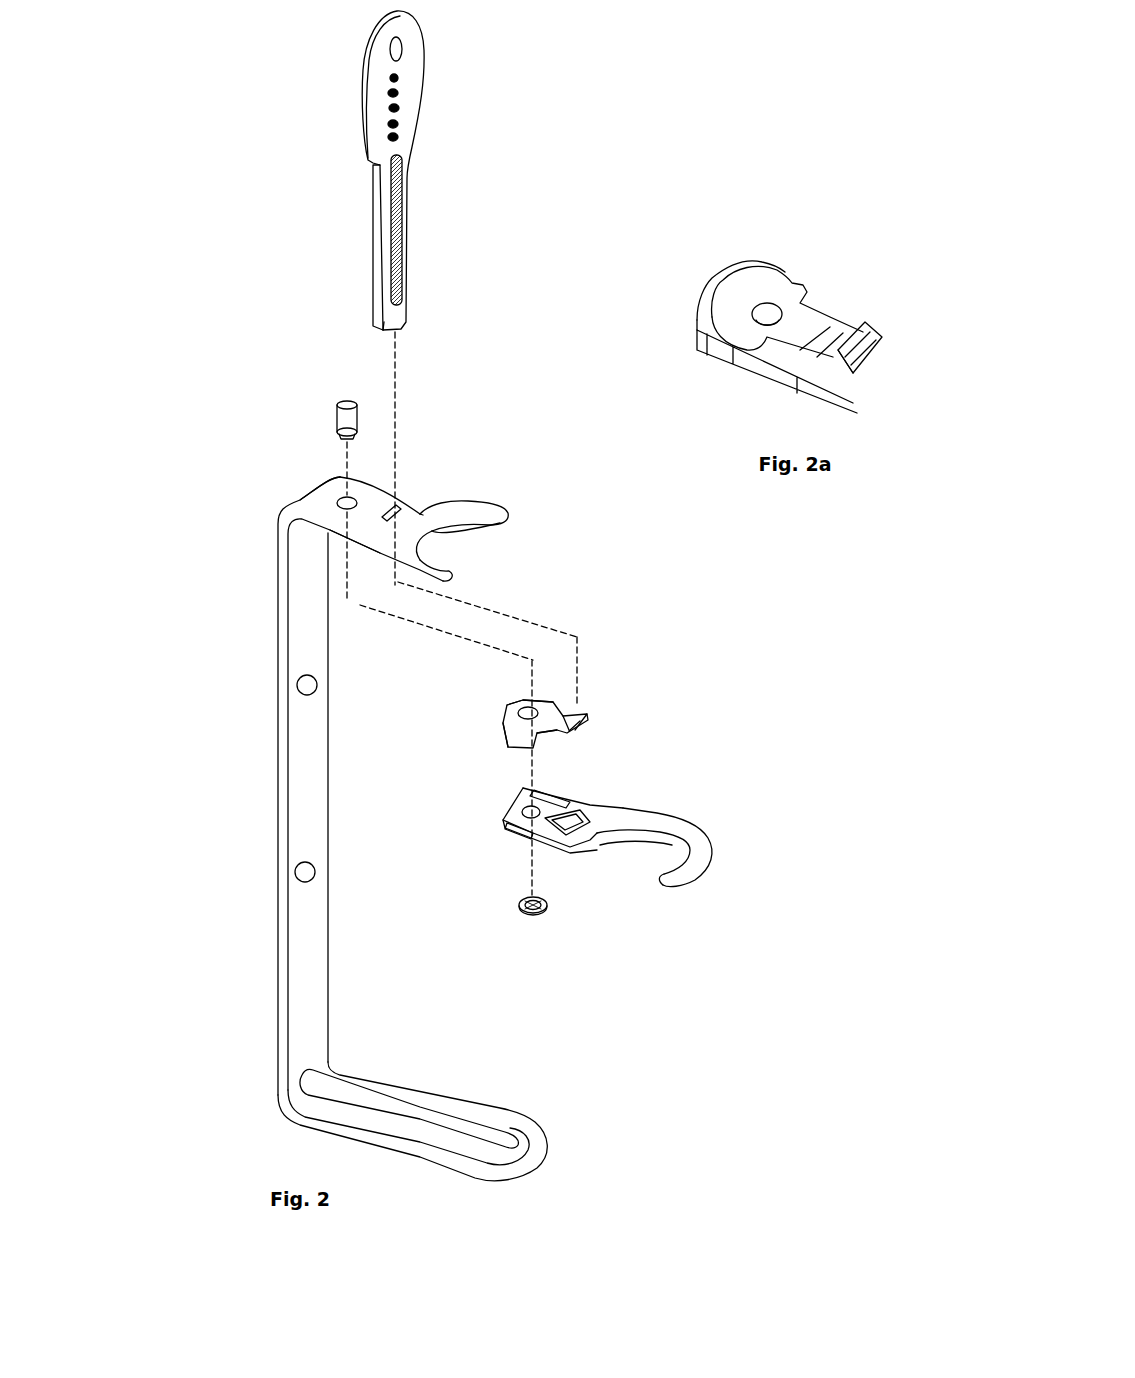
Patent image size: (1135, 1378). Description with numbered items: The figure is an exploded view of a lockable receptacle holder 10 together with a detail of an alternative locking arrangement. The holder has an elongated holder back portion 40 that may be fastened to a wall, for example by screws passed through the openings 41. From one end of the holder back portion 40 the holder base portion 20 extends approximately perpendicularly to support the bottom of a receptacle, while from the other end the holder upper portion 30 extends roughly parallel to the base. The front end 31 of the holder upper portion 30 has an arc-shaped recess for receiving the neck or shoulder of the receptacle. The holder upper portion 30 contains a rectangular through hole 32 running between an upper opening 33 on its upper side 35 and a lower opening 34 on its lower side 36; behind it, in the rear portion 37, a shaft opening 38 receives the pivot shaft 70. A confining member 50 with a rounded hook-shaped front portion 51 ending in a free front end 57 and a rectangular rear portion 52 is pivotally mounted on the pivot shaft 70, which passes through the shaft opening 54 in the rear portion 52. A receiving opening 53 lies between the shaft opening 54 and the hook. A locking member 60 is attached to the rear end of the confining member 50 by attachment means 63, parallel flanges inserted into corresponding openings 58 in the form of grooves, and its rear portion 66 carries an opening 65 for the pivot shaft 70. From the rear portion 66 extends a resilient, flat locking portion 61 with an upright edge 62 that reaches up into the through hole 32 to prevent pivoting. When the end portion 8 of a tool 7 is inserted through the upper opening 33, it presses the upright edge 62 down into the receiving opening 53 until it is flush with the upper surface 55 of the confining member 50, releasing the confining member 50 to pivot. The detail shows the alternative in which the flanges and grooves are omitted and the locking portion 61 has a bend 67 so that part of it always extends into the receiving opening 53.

In FIG. 2, the tool 7 is at (345, 120).
In FIG. 2, the end portion of the tool 8 is at (380, 325).
In FIG. 2, the receptacle holder 10 is at (175, 480).
In FIG. 2, the holder base portion 20 is at (488, 1105).
In FIG. 2, the holder upper portion 30 is at (407, 507).
In FIG. 2, the front end of the holder upper portion 31 is at (492, 512).
In FIG. 2, the through hole 32 is at (404, 500).
In FIG. 2, the upper opening 33 is at (388, 509).
In FIG. 2, the lower opening 34 is at (377, 548).
In FIG. 2, the upper side of the holder upper portion 35 is at (423, 513).
In FIG. 2, the lower side of the holder upper portion 36 is at (437, 533).
In FIG. 2, the rear portion of the holder upper portion 37 is at (330, 483).
In FIG. 2, the shaft opening 38 is at (337, 500).
In FIG. 2, the holder back portion 40 is at (270, 754).
In FIG. 2, the openings 41 is at (297, 683).
In FIG. 2, the confining member 50 is at (607, 863).
In FIG. 2A, the confining member 50 is at (775, 283).
In FIG. 2, the hook-shaped front portion 51 is at (696, 874).
In FIG. 2, the rear portion of the confining member 52 is at (503, 808).
In FIG. 2, the receiving opening 53 is at (587, 807).
In FIG. 2, the shaft opening of the confining member 54 is at (516, 816).
In FIG. 2, the upper surface of the confining member 55 is at (597, 834).
In FIG. 2, the front end of the hook-shaped front portion 57 is at (668, 884).
In FIG. 2, the openings 58 is at (548, 798).
In FIG. 2, the locking member 60 is at (551, 709).
In FIG. 2A, the locking member 60 is at (733, 307).
In FIG. 2, the locking portion 61 is at (568, 725).
In FIG. 2A, the locking portion 61 is at (830, 330).
In FIG. 2, the upright edge 62 is at (580, 723).
In FIG. 2A, the upright edge 62 is at (850, 348).
In FIG. 2, the attachment means 63 is at (566, 718).
In FIG. 2, the opening for the pivot shaft 65 is at (520, 710).
In FIG. 2, the rear portion of the locking member 66 is at (522, 700).
In FIG. 2A, the bend 67 is at (823, 325).
In FIG. 2, the pivot shaft 70 is at (335, 398).